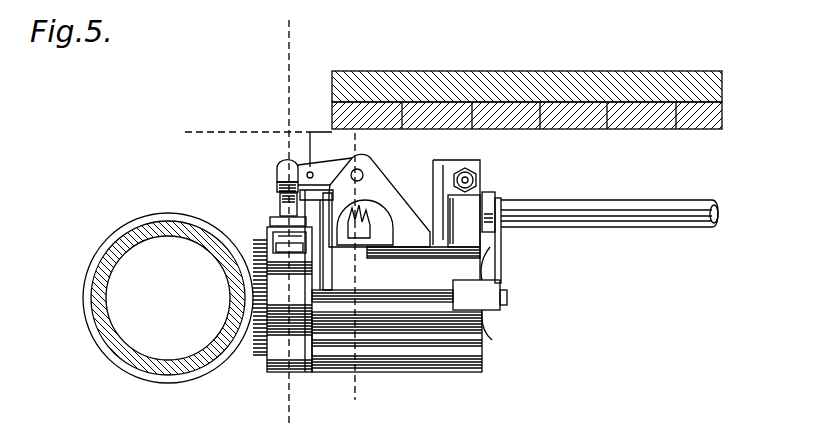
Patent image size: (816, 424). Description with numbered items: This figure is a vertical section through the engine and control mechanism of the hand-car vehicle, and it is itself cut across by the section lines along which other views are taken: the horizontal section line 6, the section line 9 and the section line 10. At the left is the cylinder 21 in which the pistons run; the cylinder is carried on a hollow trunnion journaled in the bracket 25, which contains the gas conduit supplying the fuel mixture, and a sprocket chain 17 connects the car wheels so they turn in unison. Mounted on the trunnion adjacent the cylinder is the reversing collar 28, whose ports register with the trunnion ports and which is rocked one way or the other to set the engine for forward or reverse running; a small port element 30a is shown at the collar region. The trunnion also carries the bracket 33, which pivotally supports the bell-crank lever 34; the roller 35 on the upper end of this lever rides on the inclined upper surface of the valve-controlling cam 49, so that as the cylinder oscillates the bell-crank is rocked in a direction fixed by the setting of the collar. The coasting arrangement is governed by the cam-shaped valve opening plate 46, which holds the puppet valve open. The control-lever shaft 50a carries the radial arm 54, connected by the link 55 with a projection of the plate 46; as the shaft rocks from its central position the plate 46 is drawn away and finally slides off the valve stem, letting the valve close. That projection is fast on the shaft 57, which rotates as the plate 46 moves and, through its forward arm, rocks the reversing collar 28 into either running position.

The section line 6 is at (185, 88).
The section line 9 is at (307, 405).
The section line 10 is at (502, 408).
The cylinder 21 is at (168, 298).
The reversing collar 28 is at (290, 357).
The roller 35 is at (284, 168).
The valve-controlling cam 49 is at (283, 200).
The sprocket chain 17 is at (272, 220).
The slide block 30a is at (274, 238).
The bell-crank lever 34 is at (318, 172).
The bracket 33 is at (397, 200).
The radial arm 54 is at (488, 205).
The link 55 is at (498, 265).
The shaft 50a is at (600, 210).
The shaft 57 is at (412, 296).
The bracket 25 is at (428, 330).
The valve opening plate 46 is at (490, 320).